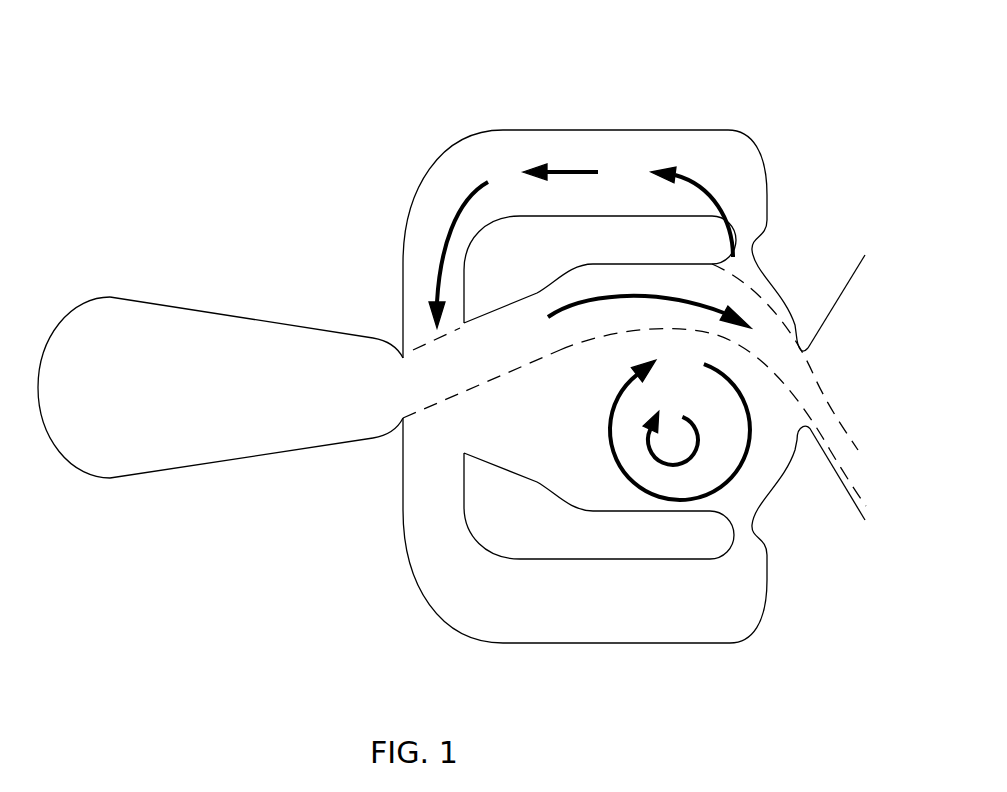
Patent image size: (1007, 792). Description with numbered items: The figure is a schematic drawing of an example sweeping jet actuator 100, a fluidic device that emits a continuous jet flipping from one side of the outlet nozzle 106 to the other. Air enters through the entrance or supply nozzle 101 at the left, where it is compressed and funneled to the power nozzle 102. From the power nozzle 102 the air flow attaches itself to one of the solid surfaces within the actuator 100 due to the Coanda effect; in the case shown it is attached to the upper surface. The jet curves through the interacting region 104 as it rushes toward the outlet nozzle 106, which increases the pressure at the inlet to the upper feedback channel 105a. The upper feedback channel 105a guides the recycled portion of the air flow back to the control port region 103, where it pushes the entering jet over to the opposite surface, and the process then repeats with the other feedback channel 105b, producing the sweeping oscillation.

The sweeping jet actuator 100 is at (128, 143).
The supply nozzle 101 is at (188, 405).
The power nozzle 102 is at (401, 343).
The control port region 103 is at (433, 445).
The interacting region 104 is at (590, 477).
The upper feedback channel 105a is at (708, 211).
The feedback channel 105b is at (683, 614).
The outlet nozzle 106 is at (854, 274).